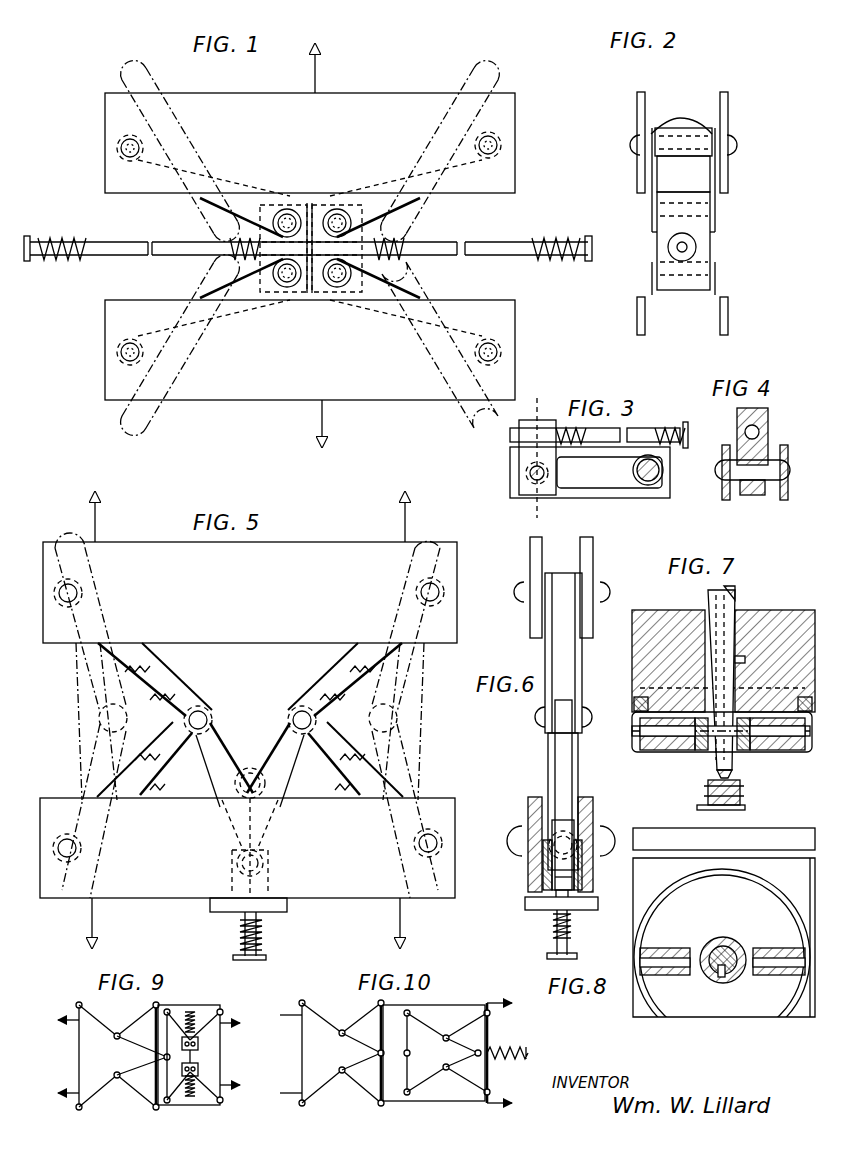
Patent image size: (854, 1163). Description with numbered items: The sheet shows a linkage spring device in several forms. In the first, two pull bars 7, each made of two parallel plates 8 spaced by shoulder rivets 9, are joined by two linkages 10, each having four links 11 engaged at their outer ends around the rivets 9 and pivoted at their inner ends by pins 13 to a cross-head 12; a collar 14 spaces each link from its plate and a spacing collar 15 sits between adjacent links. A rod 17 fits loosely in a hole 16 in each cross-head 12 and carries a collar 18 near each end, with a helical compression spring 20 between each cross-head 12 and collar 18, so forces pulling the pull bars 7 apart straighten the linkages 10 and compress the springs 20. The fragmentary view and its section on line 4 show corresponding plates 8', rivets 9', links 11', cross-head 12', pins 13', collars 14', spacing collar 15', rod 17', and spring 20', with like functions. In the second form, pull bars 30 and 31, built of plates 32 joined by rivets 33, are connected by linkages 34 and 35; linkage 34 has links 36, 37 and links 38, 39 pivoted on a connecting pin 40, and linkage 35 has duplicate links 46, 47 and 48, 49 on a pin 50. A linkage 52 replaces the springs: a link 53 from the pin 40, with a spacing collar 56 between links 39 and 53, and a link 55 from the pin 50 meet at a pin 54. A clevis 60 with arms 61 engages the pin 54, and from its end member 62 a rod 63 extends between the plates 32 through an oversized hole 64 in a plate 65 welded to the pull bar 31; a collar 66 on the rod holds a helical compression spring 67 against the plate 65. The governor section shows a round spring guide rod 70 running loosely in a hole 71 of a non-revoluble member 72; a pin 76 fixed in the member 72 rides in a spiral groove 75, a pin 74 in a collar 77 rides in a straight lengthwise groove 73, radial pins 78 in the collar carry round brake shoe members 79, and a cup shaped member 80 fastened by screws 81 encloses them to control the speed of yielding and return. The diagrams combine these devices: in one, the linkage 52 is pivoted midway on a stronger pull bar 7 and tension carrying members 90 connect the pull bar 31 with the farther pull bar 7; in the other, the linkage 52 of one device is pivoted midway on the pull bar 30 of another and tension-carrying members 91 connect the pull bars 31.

In FIG. 3, the section line 4 is at (543, 456).
In FIG. 1, the pull bar 7 is at (318, 88).
In FIG. 9, the pull bar 7 is at (170, 1058).
In FIG. 2, the parallel plates 8 is at (699, 210).
In FIG. 4, the parallel plates 8 is at (755, 486).
In FIG. 7, the parallel plates 8 is at (723, 731).
In FIG. 1, the shoulder rivets 9 is at (310, 246).
In FIG. 2, the shoulder rivets 9 is at (698, 140).
In FIG. 1, the linkage 10 is at (340, 212).
In FIG. 9, the linkage 10 is at (210, 1030).
In FIG. 1, the links 11 is at (310, 248).
In FIG. 1, the cross-head 12 is at (311, 247).
In FIG. 2, the cross-head 12 is at (713, 247).
In FIG. 1, the pins 13 is at (309, 247).
In FIG. 2, the pins 13 is at (705, 243).
In FIG. 2, the collar 14 is at (681, 130).
In FIG. 8, the collar 14 is at (723, 976).
In FIG. 2, the spacing collar 15 is at (683, 180).
In FIG. 1, the hole 16 is at (385, 250).
In FIG. 1, the rod 17 is at (309, 235).
In FIG. 1, the collar 18 is at (28, 236).
In FIG. 1, the helical compression spring 20 is at (309, 236).
In FIG. 9, the helical compression spring 20 is at (195, 1060).
In FIG. 3, the base plate 8' is at (577, 472).
In FIG. 3, the shoulder rivet 9' is at (662, 470).
In FIG. 4, the shoulder rivet 9' is at (804, 475).
In FIG. 3, the link 11' is at (609, 472).
In FIG. 4, the link 11' is at (765, 458).
In FIG. 3, the cross-head 12' is at (519, 459).
In FIG. 4, the cross-head 12' is at (768, 436).
In FIG. 3, the pin 13' is at (528, 494).
In FIG. 4, the pin 13' is at (732, 492).
In FIG. 4, the collar 14' is at (735, 435).
In FIG. 3, the spacing collar 15' is at (643, 506).
In FIG. 3, the rod 17' is at (599, 422).
In FIG. 3, the helical compression spring 20' is at (620, 425).
In FIG. 5, the pull bar 30 is at (350, 542).
In FIG. 9, the pull bar 30 is at (80, 1037).
In FIG. 10, the pull bar 30 is at (302, 1058).
In FIG. 5, the pull bar 31 is at (360, 900).
In FIG. 9, the pull bar 31 is at (156, 1032).
In FIG. 10, the pull bar 31 is at (381, 1030).
In FIG. 6, the parallel plates 32 is at (580, 544).
In FIG. 6, the shoulder rivets 33 is at (516, 860).
In FIG. 5, the linkage 34 is at (398, 718).
In FIG. 9, the linkage 34 is at (117, 1030).
In FIG. 10, the linkage 34 is at (342, 1026).
In FIG. 5, the linkage 35 is at (96, 720).
In FIG. 9, the linkage 35 is at (117, 1082).
In FIG. 10, the linkage 35 is at (342, 1078).
In FIG. 5, the link 36 is at (340, 660).
In FIG. 6, the link 36 is at (580, 662).
In FIG. 5, the link 37 is at (305, 688).
In FIG. 6, the link 37 is at (546, 660).
In FIG. 5, the link 38 is at (335, 790).
In FIG. 6, the link 38 is at (580, 736).
In FIG. 5, the link 39 is at (325, 740).
In FIG. 6, the link 39 is at (548, 738).
In FIG. 5, the pivotal connecting pin 40 is at (310, 712).
In FIG. 6, the pivotal connecting pin 40 is at (540, 718).
In FIG. 5, the link 46 is at (160, 660).
In FIG. 6, the link 46 is at (580, 678).
In FIG. 5, the link 47 is at (185, 692).
In FIG. 6, the link 47 is at (546, 698).
In FIG. 5, the link 48 is at (166, 764).
In FIG. 5, the link 49 is at (165, 738).
In FIG. 6, the link 49 is at (550, 760).
In FIG. 5, the pivotal connecting pin 50 is at (208, 716).
In FIG. 5, the linkage 52 is at (268, 866).
In FIG. 9, the linkage 52 is at (160, 1057).
In FIG. 10, the linkage 52 is at (381, 1060).
In FIG. 5, the link 53 is at (282, 740).
In FIG. 5, the pivotal connection pin 54 is at (235, 790).
In FIG. 6, the pivotal connection pin 54 is at (578, 852).
In FIG. 5, the link 55 is at (212, 737).
In FIG. 6, the spacing collar 56 is at (562, 710).
In FIG. 6, the clevis member 60 is at (542, 885).
In FIG. 6, the arms 61 is at (578, 875).
In FIG. 6, the end member 62 is at (582, 890).
In FIG. 5, the rod 63 is at (243, 925).
In FIG. 6, the rod 63 is at (557, 925).
In FIG. 6, the oversized hole 64 is at (560, 910).
In FIG. 5, the plate 65 is at (210, 910).
In FIG. 6, the plate 65 is at (526, 905).
In FIG. 5, the collar 66 is at (266, 958).
In FIG. 6, the collar 66 is at (578, 955).
In FIG. 5, the helical compression spring 67 is at (258, 940).
In FIG. 6, the helical compression spring 67 is at (572, 920).
In FIG. 7, the spring guide rod 70 is at (735, 598).
In FIG. 7, the hole 71 is at (705, 612).
In FIG. 7, the non-revoluble member 72 is at (650, 610).
In FIG. 8, the non-revoluble member 72 is at (724, 922).
In FIG. 7, the lengthwise groove 73 is at (732, 588).
In FIG. 7, the pin 74 is at (704, 700).
In FIG. 7, the spiral groove 75 is at (712, 758).
In FIG. 7, the pin 76 is at (746, 660).
In FIG. 7, the collar 77 is at (742, 752).
In FIG. 7, the radial pins 78 is at (790, 750).
In FIG. 8, the radial pins 78 is at (692, 978).
In FIG. 7, the brake shoe member 79 is at (650, 750).
In FIG. 8, the brake shoe member 79 is at (775, 978).
In FIG. 7, the cup shaped member 80 is at (676, 756).
In FIG. 8, the cup shaped member 80 is at (765, 900).
In FIG. 7, the screws 81 is at (657, 677).
In FIG. 9, the tension carrying members 90 is at (200, 1005).
In FIG. 10, the tension-carrying members 91 is at (477, 1003).